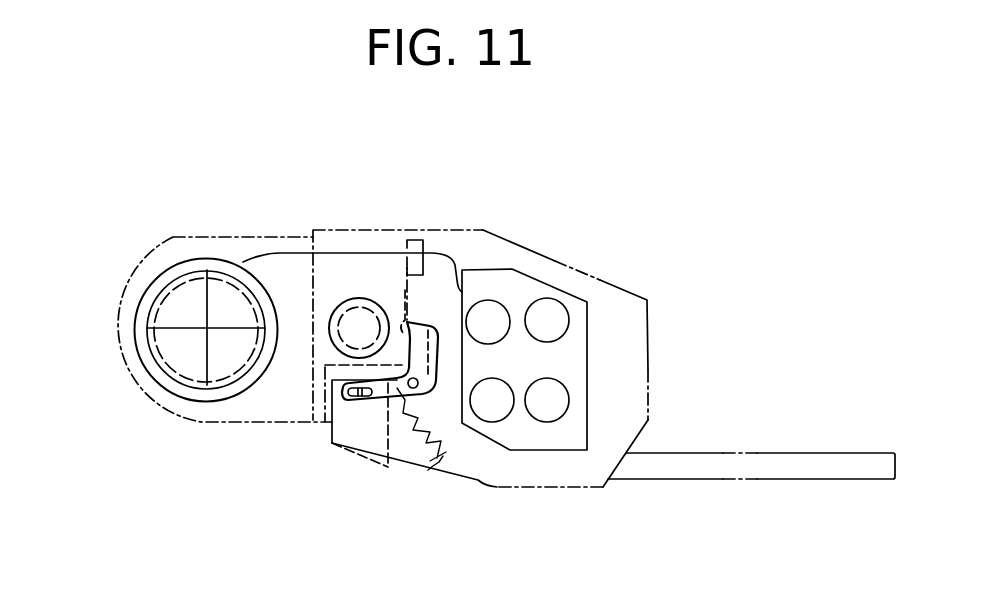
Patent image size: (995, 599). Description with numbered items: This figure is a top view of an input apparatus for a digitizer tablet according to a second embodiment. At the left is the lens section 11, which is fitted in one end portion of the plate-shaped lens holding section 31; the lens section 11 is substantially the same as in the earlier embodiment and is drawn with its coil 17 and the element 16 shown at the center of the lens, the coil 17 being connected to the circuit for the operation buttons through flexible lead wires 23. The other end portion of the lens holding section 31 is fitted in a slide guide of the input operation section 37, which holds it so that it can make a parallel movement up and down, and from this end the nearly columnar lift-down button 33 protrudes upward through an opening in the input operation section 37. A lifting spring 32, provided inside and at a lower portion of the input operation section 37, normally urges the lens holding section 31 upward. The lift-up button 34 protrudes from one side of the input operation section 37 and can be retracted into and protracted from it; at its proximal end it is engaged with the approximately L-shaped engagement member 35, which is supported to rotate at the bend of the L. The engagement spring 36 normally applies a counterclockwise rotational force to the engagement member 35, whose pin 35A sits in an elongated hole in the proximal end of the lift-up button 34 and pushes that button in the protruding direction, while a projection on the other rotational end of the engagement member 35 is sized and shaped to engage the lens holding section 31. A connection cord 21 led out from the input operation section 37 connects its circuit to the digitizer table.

The lens section 11 is at (172, 346).
The optical axis crosshair 16 is at (173, 327).
The coil 17 is at (163, 390).
The connection cord 21 is at (814, 452).
The flexible lead wires 23 is at (275, 252).
The lens holding section 31 is at (215, 423).
The lifting spring 32 is at (354, 300).
The lift-down button 33 is at (360, 303).
The lift-up button 34 is at (372, 432).
The engagement member 35 is at (420, 315).
The pin 35A is at (362, 392).
The engagement spring 36 is at (423, 415).
The input operation section 37 is at (622, 288).